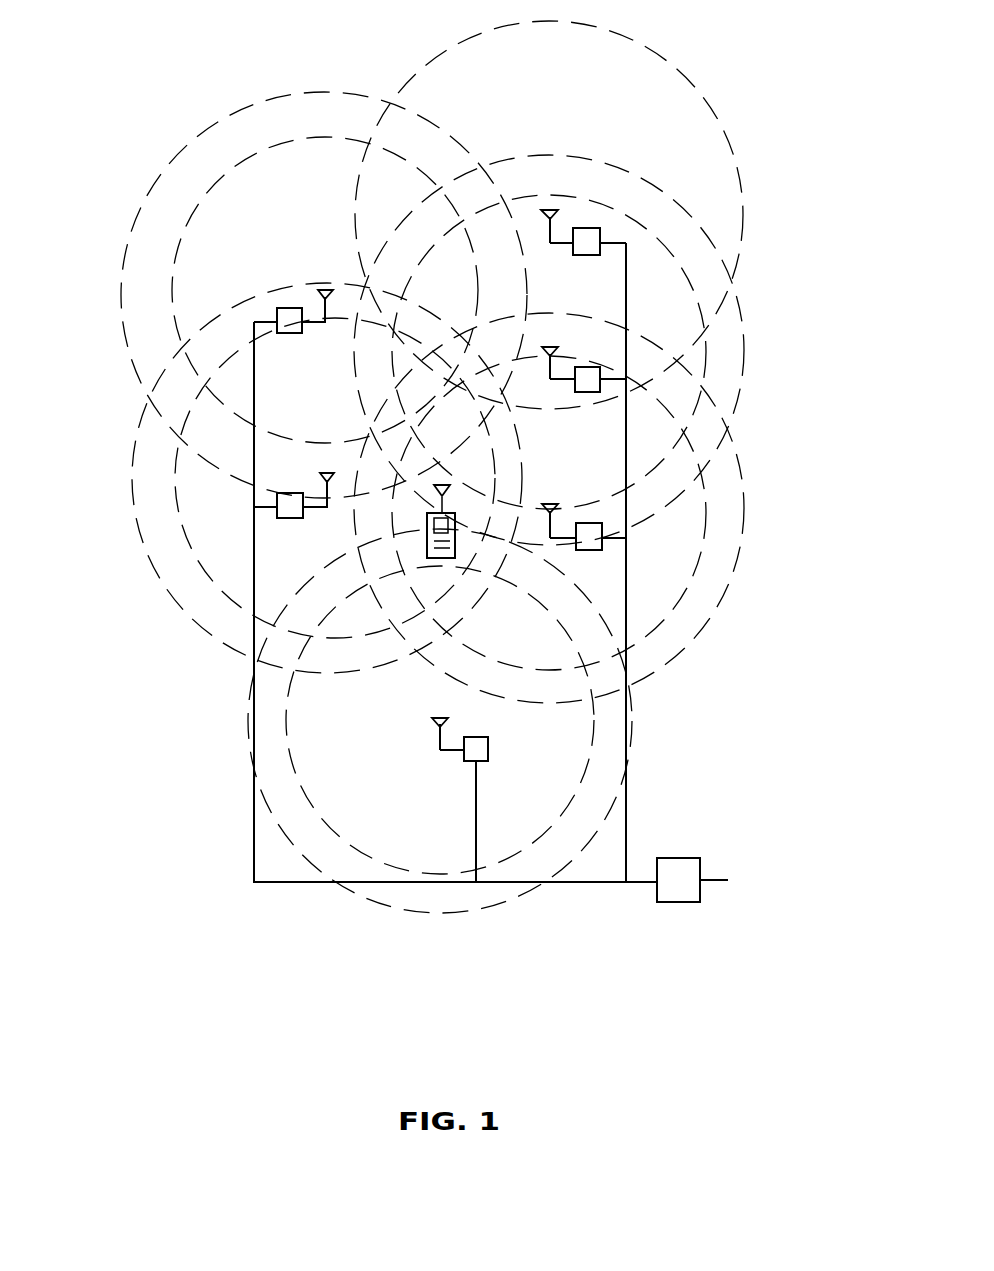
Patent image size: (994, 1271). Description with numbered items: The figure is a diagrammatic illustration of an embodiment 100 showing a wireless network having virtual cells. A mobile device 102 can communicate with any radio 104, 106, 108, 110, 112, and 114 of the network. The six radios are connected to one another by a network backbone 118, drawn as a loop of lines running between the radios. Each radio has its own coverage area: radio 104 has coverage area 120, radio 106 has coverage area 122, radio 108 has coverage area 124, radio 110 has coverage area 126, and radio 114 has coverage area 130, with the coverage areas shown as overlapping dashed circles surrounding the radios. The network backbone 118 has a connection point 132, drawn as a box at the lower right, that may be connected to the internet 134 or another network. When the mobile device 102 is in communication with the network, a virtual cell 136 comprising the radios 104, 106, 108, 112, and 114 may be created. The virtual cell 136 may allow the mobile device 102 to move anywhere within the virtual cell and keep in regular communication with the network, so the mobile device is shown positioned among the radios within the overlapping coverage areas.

The embodiment 100 is at (608, 928).
The mobile device 102 is at (452, 558).
The radio 104 is at (287, 307).
The radio 106 is at (293, 518).
The radio 108 is at (463, 757).
The radio 110 is at (588, 228).
The radio 112 is at (586, 367).
The radio 114 is at (588, 523).
The network backbone 118 is at (629, 800).
The coverage area 120 is at (297, 97).
The coverage area 122 is at (132, 472).
The coverage area 124 is at (245, 730).
The coverage area 126 is at (742, 203).
The coverage area 130 is at (740, 578).
The connection point 132 is at (683, 858).
The internet 134 is at (769, 897).
The virtual cell 136 is at (706, 491).